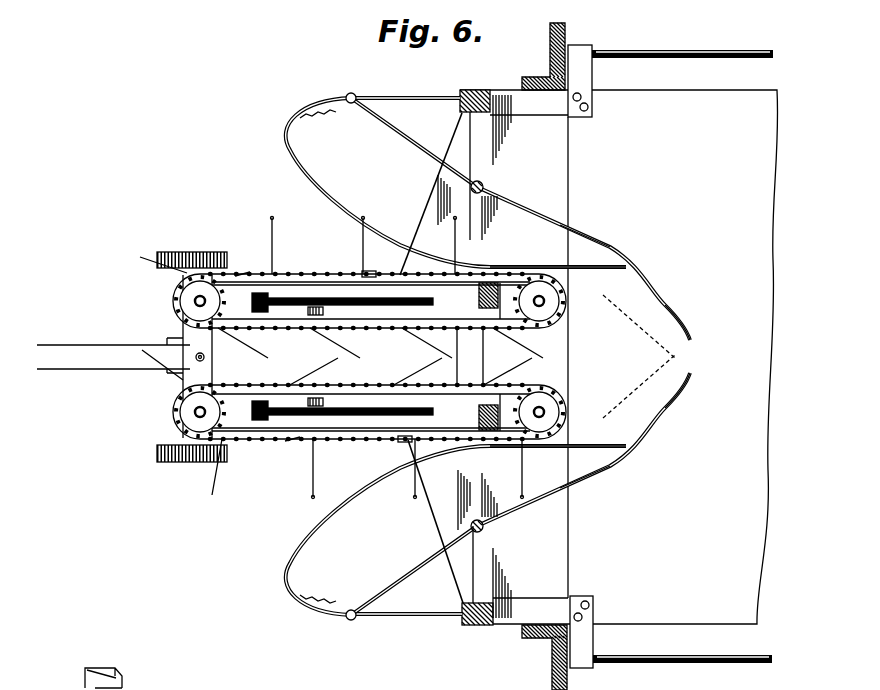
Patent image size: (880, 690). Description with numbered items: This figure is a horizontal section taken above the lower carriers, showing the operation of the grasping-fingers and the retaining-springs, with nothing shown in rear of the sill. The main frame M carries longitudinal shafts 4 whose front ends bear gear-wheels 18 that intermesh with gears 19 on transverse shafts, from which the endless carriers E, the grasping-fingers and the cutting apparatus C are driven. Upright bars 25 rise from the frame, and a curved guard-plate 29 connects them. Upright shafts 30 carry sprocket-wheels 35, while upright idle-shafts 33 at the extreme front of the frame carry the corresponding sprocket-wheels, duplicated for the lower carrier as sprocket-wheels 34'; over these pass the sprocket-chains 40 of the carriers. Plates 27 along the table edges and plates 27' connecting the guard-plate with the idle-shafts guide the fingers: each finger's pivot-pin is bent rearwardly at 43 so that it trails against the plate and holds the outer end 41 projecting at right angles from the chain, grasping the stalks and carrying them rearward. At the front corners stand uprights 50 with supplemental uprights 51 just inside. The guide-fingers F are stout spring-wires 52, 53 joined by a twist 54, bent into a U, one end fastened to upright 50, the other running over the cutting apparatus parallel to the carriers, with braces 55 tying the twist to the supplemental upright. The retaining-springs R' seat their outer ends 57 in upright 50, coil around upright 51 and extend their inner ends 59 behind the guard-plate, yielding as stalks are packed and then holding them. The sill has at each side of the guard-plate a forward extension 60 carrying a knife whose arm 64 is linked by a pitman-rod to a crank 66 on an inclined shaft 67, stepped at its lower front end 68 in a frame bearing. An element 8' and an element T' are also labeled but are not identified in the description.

The shaft 4 is at (680, 655).
The frame plate 8' is at (619, 357).
The gear-wheel 18 is at (554, 668).
The gear 19 is at (534, 640).
The upright bar 25 is at (477, 412).
The depending plate 27 is at (380, 295).
The plate 27' is at (410, 419).
The guard-plate 29 is at (570, 352).
The upright shaft 30 is at (545, 413).
The idle-shaft 33 is at (200, 356).
The sprocket-wheel 34' is at (179, 373).
The sprocket-wheel 35 is at (556, 408).
The sprocket-chain 40 is at (350, 441).
The outer end of grasping-finger 41 is at (314, 470).
The rearwardly bent portion of pivot-pin 43 is at (290, 442).
The upright 50 is at (467, 627).
The supplemental upright 51 is at (484, 527).
The spring-wire 52 is at (316, 524).
The spring-wire 53 is at (478, 195).
The twist 54 is at (346, 103).
The brace 55 is at (420, 553).
The outer end of retaining-spring 57 is at (455, 118).
The inner end of retaining-spring 59 is at (672, 305).
The forward extension of sill 60 is at (517, 356).
The arm 64 is at (404, 441).
The crank 66 is at (372, 274).
The shaft 67 is at (297, 307).
The lower front end of shaft 68 is at (245, 305).
The cutting apparatus C is at (430, 521).
The endless carrier E is at (371, 356).
The guide-finger F is at (546, 449).
The main frame M is at (462, 350).
The retaining-spring R' is at (599, 355).
The shaft T' is at (113, 355).